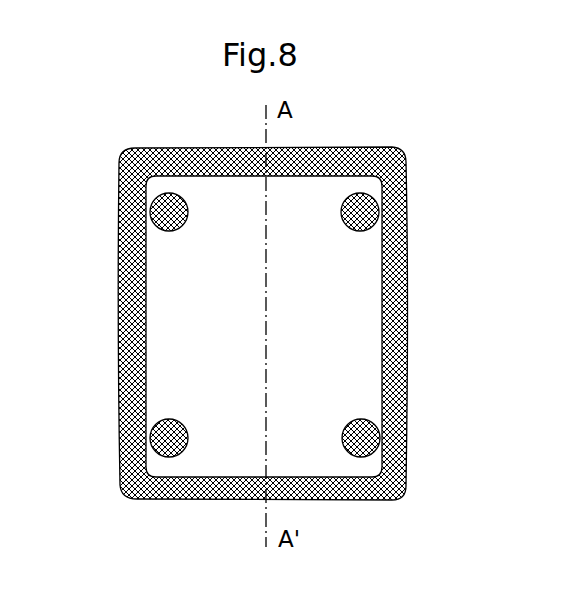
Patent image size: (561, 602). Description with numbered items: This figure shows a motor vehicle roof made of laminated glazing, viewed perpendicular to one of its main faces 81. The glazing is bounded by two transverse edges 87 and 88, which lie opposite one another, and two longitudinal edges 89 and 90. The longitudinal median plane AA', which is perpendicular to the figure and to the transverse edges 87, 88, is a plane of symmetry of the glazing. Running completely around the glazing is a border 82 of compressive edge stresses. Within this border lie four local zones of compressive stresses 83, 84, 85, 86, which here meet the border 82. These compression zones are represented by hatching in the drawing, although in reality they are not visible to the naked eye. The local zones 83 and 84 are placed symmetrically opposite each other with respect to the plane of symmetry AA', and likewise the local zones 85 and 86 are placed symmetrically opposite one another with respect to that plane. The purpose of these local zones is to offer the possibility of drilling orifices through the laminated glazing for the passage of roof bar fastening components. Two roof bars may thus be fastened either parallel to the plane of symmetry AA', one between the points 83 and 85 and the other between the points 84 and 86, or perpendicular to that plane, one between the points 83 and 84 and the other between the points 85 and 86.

The main face 81 is at (316, 192).
The border of compressive edge stresses 82 is at (380, 340).
The local zone of compressive stresses 83 is at (170, 232).
The local zone of compressive stresses 84 is at (358, 231).
The local zone of compressive stresses 85 is at (172, 420).
The local zone of compressive stresses 86 is at (360, 420).
The transverse edge 87 is at (199, 506).
The transverse edge 88 is at (193, 146).
The longitudinal edge 89 is at (115, 342).
The longitudinal edge 90 is at (416, 302).